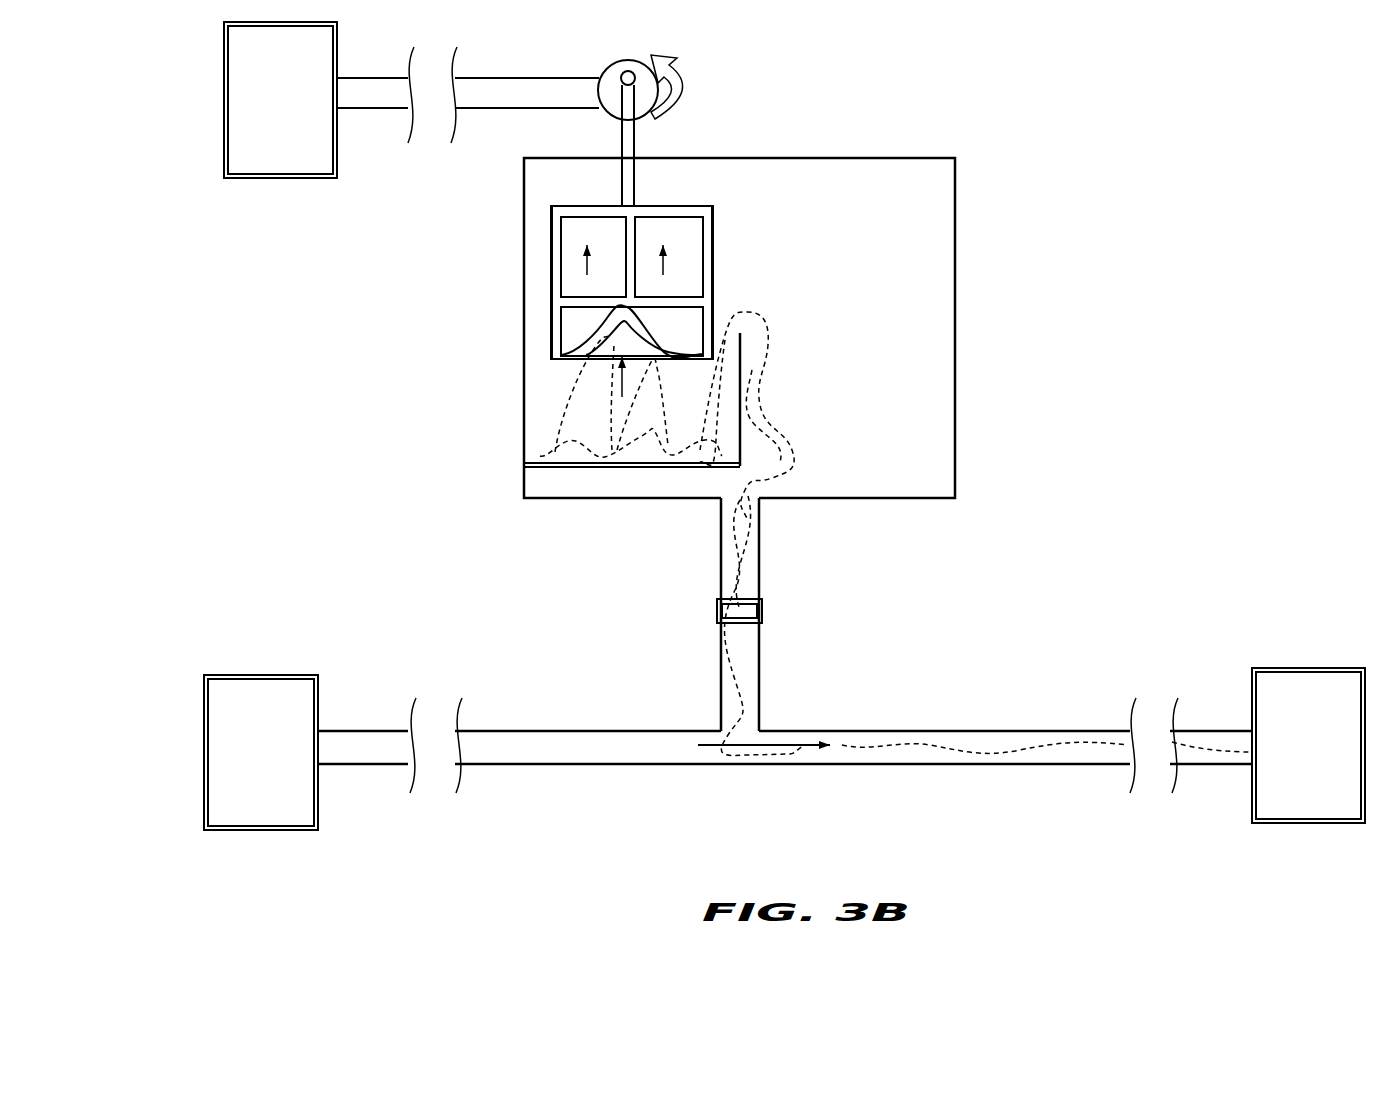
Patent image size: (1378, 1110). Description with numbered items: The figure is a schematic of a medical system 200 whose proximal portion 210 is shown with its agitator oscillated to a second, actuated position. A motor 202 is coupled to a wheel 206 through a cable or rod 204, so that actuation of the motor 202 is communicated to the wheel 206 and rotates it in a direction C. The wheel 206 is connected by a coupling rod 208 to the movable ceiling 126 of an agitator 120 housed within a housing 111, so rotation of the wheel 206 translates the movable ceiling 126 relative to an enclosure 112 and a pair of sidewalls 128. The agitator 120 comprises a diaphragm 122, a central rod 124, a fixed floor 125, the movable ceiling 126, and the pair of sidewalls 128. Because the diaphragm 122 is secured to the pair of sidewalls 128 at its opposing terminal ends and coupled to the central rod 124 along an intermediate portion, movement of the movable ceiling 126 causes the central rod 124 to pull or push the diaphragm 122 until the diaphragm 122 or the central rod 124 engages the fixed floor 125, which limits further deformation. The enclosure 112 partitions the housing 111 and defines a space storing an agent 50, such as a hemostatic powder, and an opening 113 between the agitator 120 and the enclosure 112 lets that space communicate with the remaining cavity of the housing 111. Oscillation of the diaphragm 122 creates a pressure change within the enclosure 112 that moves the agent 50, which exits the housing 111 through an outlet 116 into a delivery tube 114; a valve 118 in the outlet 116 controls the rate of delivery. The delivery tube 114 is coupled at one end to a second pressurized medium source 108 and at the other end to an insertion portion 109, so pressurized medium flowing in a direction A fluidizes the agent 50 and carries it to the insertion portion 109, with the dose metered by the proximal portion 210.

The medical system 200 is at (1252, 132).
The motor 202 is at (253, 182).
The rod 204 is at (397, 93).
The wheel 206 is at (612, 78).
The coupling rod 208 is at (626, 138).
The proximal portion 210 is at (987, 202).
The housing 111 is at (956, 333).
The enclosure 112 is at (726, 454).
The opening 113 is at (727, 338).
The delivery tube 114 is at (595, 748).
The outlet 116 is at (735, 556).
The valve 118 is at (738, 610).
The agitator 120 is at (725, 262).
The diaphragm 122 is at (613, 333).
The central rod 124 is at (626, 276).
The fixed floor 125 is at (578, 306).
The movable ceiling 126 is at (656, 205).
The pair of sidewalls 128 is at (556, 225).
The agent 50 is at (536, 456).
The second pressurized medium source 108 is at (275, 845).
The insertion portion 109 is at (1279, 655).
The direction A is at (795, 747).
The direction C is at (694, 86).